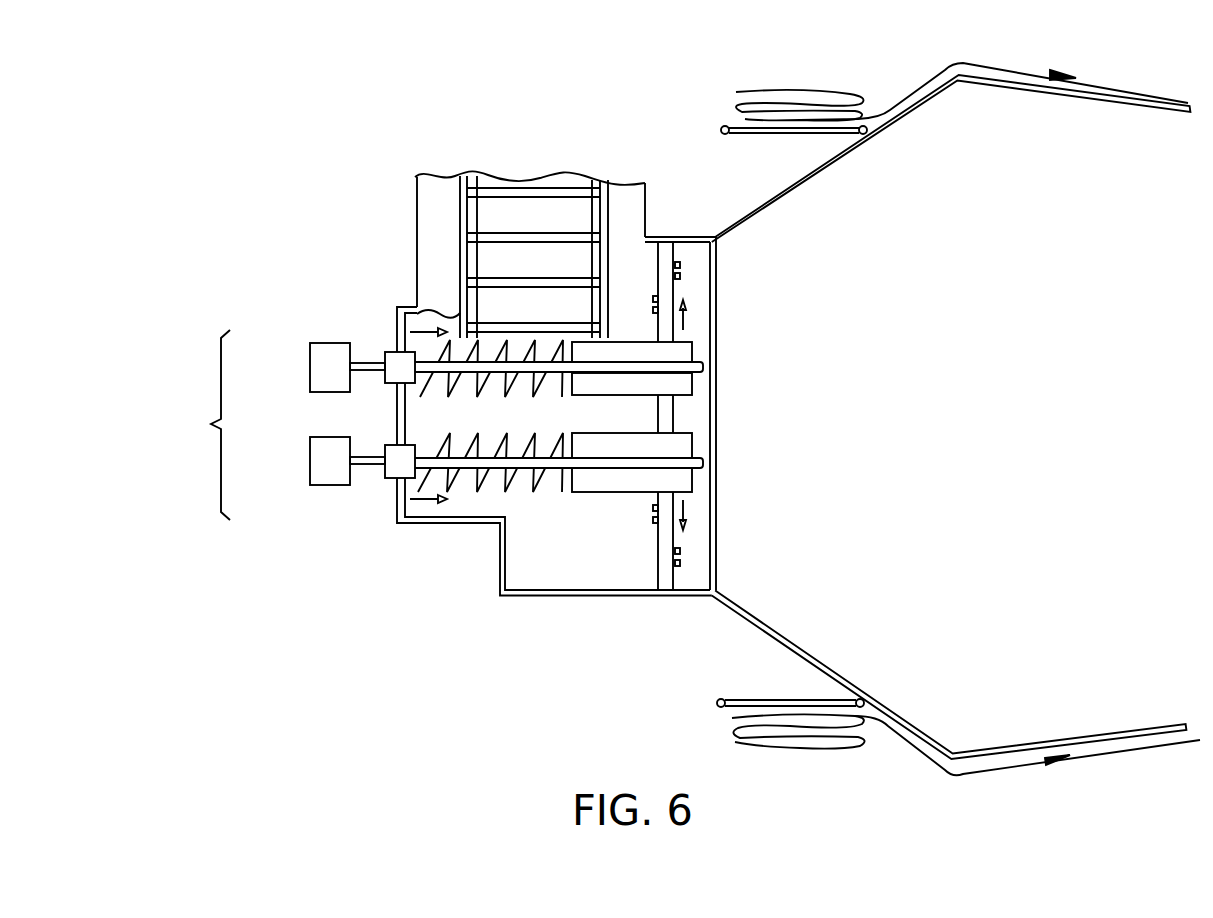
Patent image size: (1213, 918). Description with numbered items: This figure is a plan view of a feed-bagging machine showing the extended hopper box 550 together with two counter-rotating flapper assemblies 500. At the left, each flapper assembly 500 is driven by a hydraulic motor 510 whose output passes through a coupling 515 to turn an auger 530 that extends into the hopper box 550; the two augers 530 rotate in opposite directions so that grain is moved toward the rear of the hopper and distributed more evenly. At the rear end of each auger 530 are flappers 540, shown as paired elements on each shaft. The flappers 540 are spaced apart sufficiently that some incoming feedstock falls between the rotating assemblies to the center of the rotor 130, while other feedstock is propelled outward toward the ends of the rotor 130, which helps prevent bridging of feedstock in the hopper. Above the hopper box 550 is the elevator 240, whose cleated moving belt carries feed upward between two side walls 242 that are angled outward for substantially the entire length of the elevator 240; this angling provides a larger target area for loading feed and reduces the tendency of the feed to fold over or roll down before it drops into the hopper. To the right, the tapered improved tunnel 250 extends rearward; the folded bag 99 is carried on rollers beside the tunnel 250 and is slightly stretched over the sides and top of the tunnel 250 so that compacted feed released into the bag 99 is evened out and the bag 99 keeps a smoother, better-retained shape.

The bag 99 is at (797, 90).
The rotor 130 is at (655, 553).
The elevator 240 is at (533, 172).
The side walls 242 is at (417, 222).
The tunnel 250 is at (1055, 738).
The flapper assemblies 500 is at (196, 425).
The hydraulic motor 510 is at (307, 377).
The coupling 515 is at (388, 483).
The auger 530 is at (537, 398).
The flappers 540 is at (694, 350).
The extended hopper box 550 is at (420, 523).